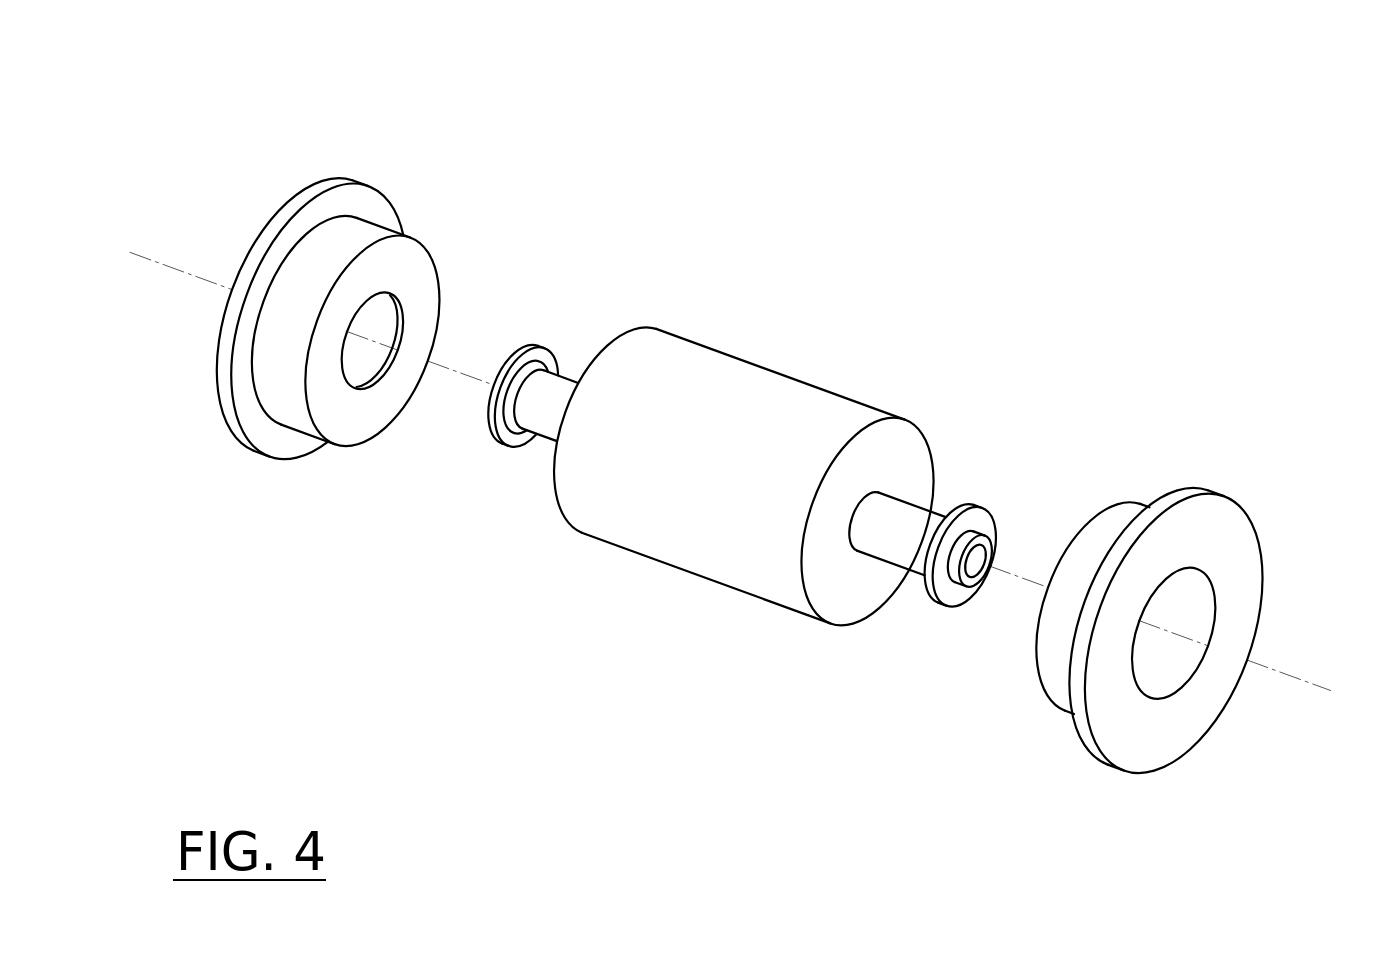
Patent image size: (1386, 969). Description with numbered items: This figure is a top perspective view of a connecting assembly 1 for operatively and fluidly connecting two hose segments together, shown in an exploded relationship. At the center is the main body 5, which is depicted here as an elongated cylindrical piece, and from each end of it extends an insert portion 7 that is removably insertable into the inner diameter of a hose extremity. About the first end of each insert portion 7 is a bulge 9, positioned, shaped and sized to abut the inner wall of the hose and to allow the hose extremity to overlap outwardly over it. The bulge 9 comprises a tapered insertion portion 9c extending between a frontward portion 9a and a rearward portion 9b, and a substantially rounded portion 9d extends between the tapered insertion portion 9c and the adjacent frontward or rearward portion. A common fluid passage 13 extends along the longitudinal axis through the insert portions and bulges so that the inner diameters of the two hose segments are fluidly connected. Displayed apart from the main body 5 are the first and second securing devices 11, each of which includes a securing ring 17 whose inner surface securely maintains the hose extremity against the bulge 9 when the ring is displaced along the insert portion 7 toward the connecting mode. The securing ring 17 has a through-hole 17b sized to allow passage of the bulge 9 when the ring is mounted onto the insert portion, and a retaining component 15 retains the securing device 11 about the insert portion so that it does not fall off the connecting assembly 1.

The connecting assembly 1 is at (1024, 241).
The main body 5 is at (863, 390).
The insert portion 7 is at (526, 433).
The bulge 9 is at (559, 300).
The frontward portion 9a is at (979, 596).
The rearward portion 9b is at (562, 345).
The tapered insertion portion 9c is at (477, 408).
The substantially rounded portion 9d is at (533, 335).
The securing device 11 is at (424, 130).
The fluid passage 13 is at (993, 561).
The retaining component 15 is at (408, 308).
The securing ring 17 is at (779, 487).
The through-hole 17b is at (364, 370).